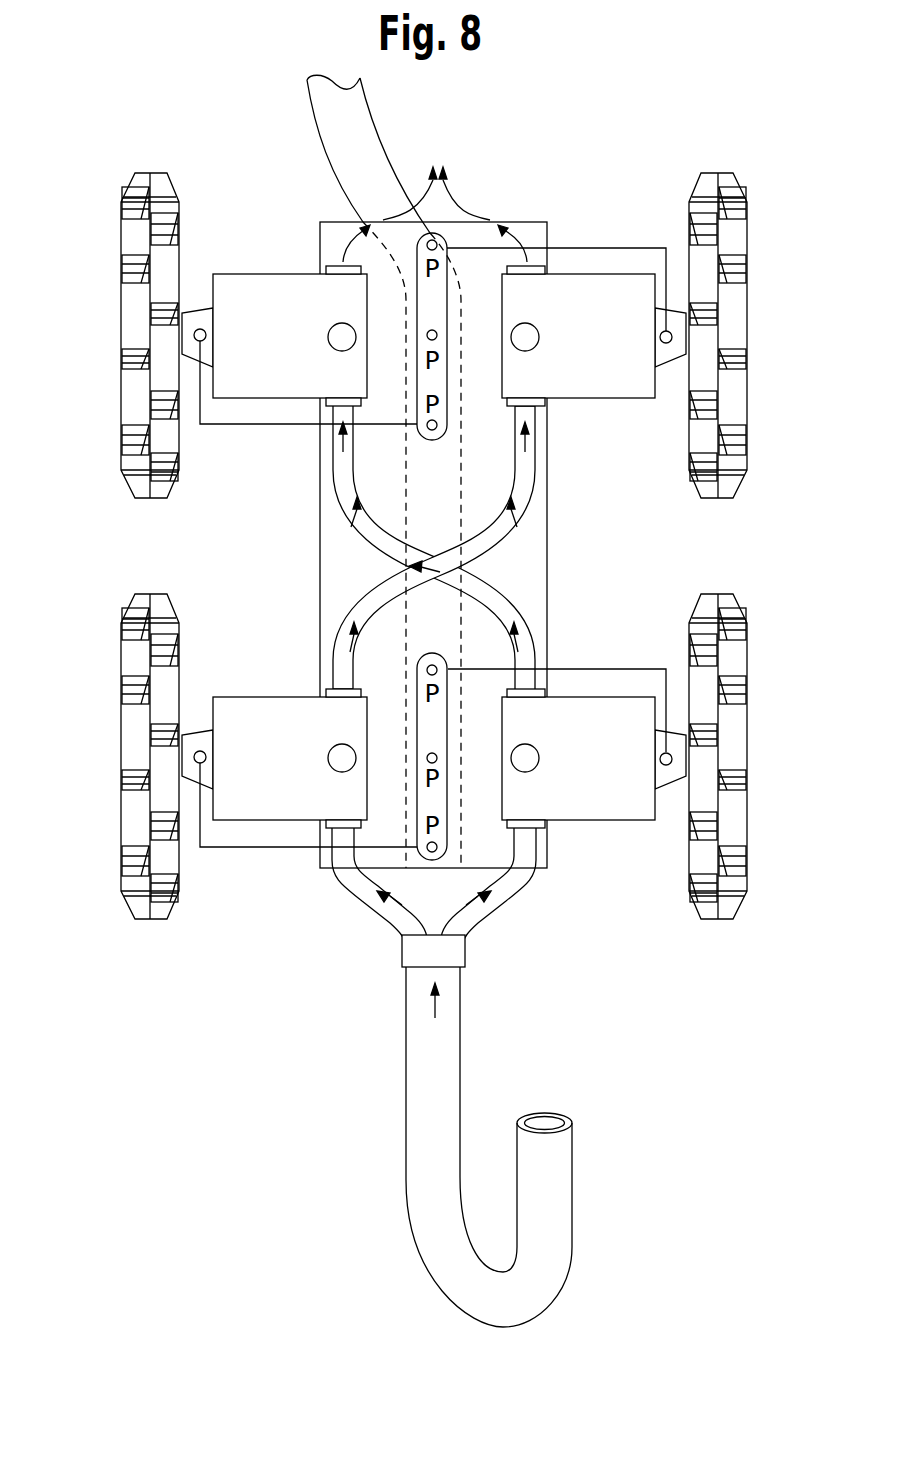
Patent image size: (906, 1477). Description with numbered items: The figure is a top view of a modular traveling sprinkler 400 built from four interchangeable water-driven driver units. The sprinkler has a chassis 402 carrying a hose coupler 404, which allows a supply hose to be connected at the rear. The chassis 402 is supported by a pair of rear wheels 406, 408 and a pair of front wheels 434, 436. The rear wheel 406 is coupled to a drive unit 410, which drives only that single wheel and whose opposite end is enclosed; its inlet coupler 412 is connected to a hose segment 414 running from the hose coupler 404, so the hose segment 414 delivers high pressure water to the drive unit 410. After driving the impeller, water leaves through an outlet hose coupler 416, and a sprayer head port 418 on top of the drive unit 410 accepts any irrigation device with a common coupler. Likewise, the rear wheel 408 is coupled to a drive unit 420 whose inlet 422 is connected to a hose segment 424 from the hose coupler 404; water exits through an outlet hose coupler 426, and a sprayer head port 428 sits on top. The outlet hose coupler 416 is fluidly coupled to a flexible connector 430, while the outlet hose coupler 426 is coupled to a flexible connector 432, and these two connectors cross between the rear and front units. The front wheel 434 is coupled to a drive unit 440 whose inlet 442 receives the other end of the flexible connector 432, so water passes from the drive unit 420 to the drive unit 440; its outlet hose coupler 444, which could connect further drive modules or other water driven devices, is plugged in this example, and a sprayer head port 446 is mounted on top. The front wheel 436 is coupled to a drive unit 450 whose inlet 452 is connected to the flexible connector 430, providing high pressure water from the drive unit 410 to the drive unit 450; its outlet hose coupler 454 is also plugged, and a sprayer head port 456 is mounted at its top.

The traveling sprinkler 400 is at (235, 163).
The chassis 402 is at (530, 540).
The hose coupler 404 is at (466, 950).
The rear wheel 406 is at (735, 738).
The rear wheel 408 is at (131, 823).
The drive unit 410 is at (623, 803).
The inlet coupler 412 is at (542, 828).
The hose segment 414 is at (503, 898).
The outlet hose coupler 416 is at (534, 689).
The sprayer head port 418 is at (540, 756).
The drive unit 420 is at (243, 808).
The inlet 422 is at (325, 828).
The hose segment 424 is at (370, 900).
The outlet hose coupler 426 is at (326, 690).
The sprayer head port 428 is at (328, 758).
The flexible connector 430 is at (505, 590).
The flexible connector 432 is at (340, 480).
The front wheel 434 is at (730, 326).
The front wheel 436 is at (131, 318).
The drive unit 440 is at (576, 274).
The inlet 442 is at (544, 404).
The outlet hose coupler 444 is at (536, 264).
The sprayer head port 446 is at (540, 337).
The drive unit 450 is at (236, 285).
The inlet 452 is at (332, 407).
The outlet hose coupler 454 is at (326, 268).
The sprayer head port 456 is at (328, 337).